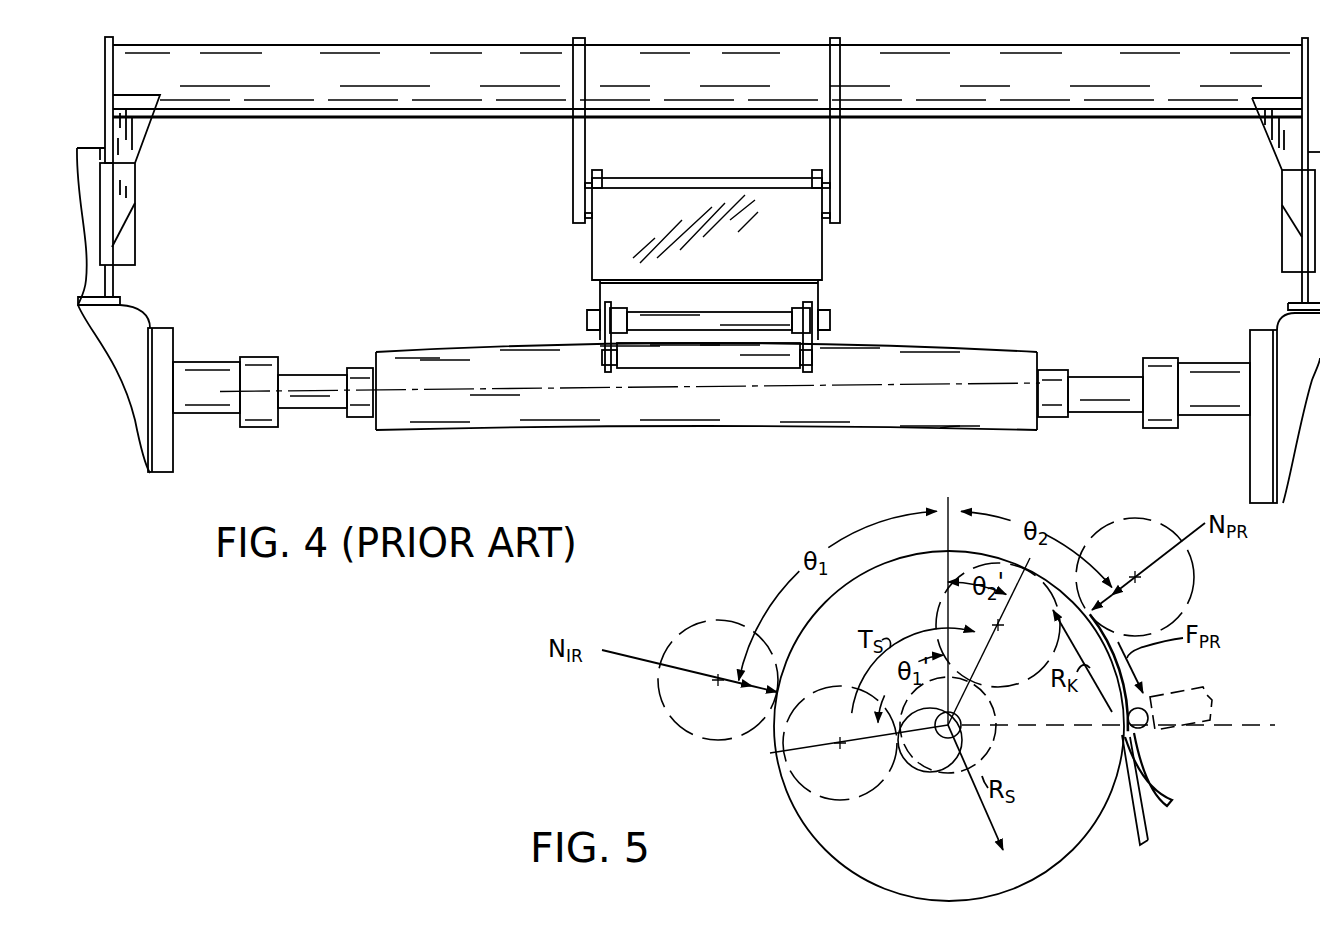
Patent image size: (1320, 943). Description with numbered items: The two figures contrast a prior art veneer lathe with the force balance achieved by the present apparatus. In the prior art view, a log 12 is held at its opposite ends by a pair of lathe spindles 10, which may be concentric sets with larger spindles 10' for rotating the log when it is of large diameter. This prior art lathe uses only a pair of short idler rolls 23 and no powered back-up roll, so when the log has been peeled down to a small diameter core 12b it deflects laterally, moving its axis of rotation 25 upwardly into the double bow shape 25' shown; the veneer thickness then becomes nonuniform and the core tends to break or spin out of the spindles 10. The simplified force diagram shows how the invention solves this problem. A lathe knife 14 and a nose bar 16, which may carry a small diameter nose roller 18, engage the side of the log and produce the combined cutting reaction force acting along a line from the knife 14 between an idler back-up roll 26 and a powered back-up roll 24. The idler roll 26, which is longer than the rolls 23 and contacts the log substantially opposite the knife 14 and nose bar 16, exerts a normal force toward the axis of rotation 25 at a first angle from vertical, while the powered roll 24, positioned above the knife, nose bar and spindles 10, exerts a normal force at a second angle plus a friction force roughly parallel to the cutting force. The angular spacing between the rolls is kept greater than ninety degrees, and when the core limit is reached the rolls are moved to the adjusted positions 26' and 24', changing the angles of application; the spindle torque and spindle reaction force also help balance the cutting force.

In FIG. 4, the lathe spindles 10 is at (710, 355).
In FIG. 5, the lathe spindles 10 is at (991, 712).
In FIG. 4, the larger spindles 10' is at (711, 361).
In FIG. 5, the log 12 is at (876, 880).
In FIG. 4, the minimum diameter core 12b is at (940, 428).
In FIG. 5, the minimum diameter core 12b is at (990, 754).
In FIG. 5, the lathe knife 14 is at (1138, 840).
In FIG. 5, the nose bar 16 is at (1193, 700).
In FIG. 5, the nose roller 18 is at (1150, 710).
In FIG. 4, the short idler rolls 23 is at (750, 363).
In FIG. 5, the powered back-up roll 24 is at (1138, 556).
In FIG. 5, the powered back-up roll at adjusted position 24' is at (998, 579).
In FIG. 4, the axis of rotation 25 is at (706, 386).
In FIG. 5, the axis of rotation 25 is at (930, 761).
In FIG. 4, the double bow shape 25' is at (470, 370).
In FIG. 5, the idler back-up roll 26 is at (713, 655).
In FIG. 5, the idler back-up roll at adjusted position 26' is at (806, 743).